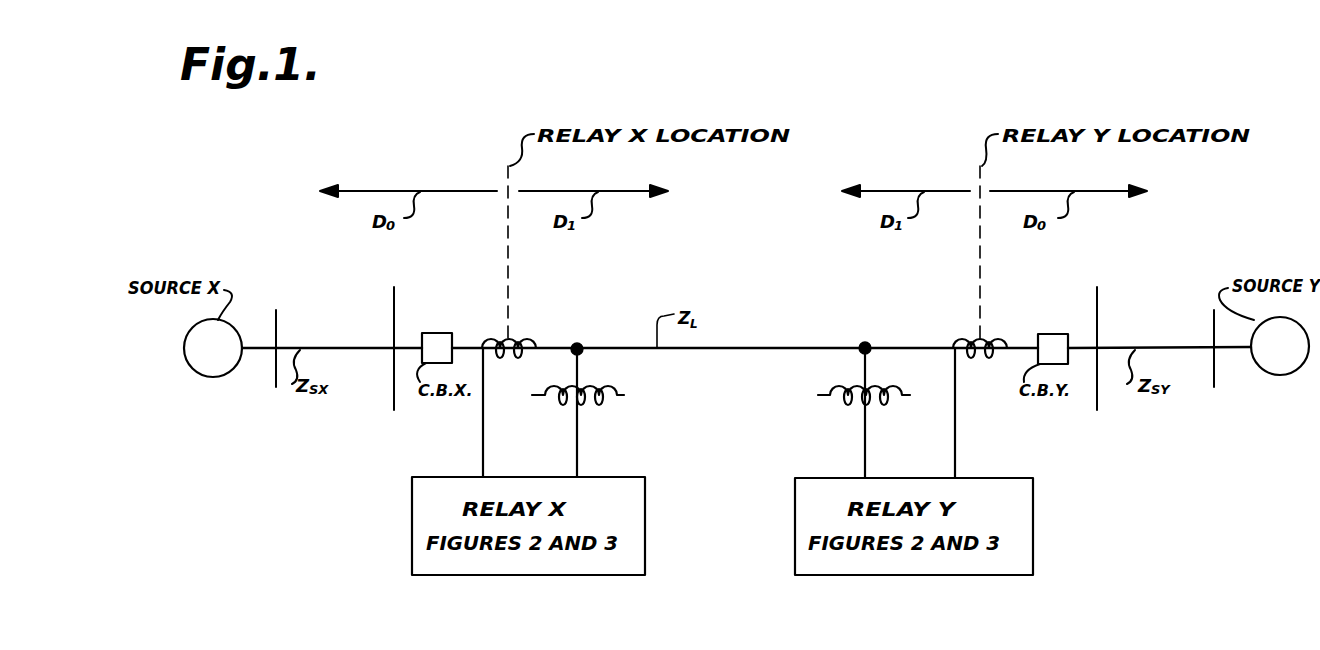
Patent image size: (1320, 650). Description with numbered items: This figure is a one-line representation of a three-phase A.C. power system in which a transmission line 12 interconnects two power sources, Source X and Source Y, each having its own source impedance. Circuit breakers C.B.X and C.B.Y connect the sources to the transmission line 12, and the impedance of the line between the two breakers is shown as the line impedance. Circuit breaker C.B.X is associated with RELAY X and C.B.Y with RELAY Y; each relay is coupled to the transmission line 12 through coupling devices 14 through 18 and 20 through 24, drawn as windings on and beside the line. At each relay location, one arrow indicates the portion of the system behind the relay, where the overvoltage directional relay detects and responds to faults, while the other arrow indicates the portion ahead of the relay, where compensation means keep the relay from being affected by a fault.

The transmission line 12 is at (737, 348).
The coupling device 14 is at (616, 390).
The coupling device 18 is at (826, 390).
The coupling device 20 is at (522, 342).
The coupling device 24 is at (992, 342).